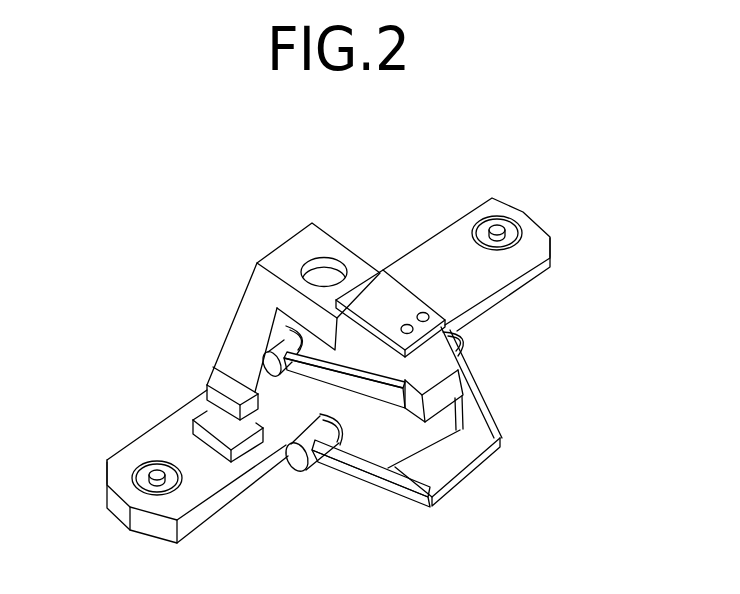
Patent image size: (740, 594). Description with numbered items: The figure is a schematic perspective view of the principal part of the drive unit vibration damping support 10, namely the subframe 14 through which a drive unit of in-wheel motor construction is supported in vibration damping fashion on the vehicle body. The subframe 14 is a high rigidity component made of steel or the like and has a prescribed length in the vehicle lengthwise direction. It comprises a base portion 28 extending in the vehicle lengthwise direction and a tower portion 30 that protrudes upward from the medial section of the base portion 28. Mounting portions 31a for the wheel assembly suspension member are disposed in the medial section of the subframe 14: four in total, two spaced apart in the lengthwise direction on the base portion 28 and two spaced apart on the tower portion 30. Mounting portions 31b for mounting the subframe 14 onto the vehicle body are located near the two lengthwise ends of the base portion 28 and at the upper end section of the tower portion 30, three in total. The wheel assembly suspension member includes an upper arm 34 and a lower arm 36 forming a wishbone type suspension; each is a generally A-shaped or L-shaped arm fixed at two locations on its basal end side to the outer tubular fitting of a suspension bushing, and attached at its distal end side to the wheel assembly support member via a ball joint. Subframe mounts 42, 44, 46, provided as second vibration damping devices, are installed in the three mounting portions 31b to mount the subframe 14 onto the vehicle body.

The drive unit vibration damping support 10 is at (234, 254).
The subframe 14 is at (506, 306).
The base portion 28 is at (186, 430).
The tower portion 30 is at (243, 336).
The mounting portions 31a is at (272, 394).
The mounting portions 31b is at (387, 262).
The upper arm 34 is at (424, 404).
The lower arm 36 is at (453, 457).
The subframe mount 42 is at (134, 473).
The subframe mount 44 is at (504, 222).
The subframe mount 46 is at (412, 280).